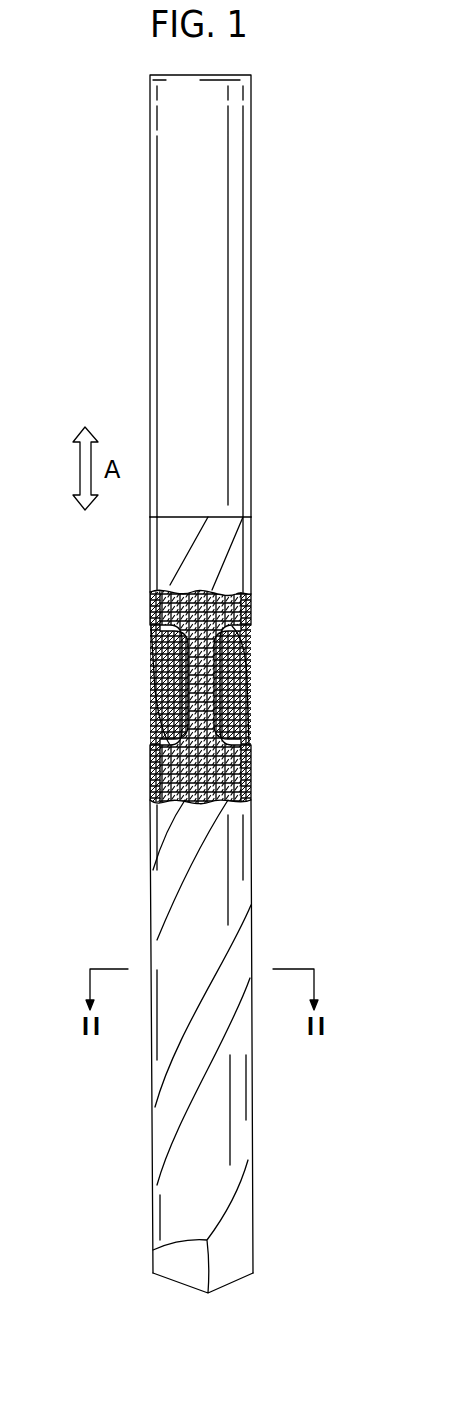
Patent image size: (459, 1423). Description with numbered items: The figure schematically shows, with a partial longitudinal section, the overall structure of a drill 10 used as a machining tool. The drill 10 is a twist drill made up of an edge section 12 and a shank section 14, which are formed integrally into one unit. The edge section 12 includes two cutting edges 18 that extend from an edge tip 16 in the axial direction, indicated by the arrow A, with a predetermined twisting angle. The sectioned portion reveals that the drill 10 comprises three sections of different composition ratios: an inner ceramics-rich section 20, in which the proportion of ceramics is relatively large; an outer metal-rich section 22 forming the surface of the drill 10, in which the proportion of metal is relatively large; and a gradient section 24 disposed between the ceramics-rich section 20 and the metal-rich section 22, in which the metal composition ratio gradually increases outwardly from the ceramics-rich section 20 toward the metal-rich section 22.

The drill 10 is at (373, 215).
The edge section 12 is at (224, 908).
The shank section 14 is at (252, 298).
The edge tip 16 is at (208, 1293).
The cutting edges 18 is at (152, 745).
The ceramics-rich section 20 is at (248, 768).
The metal-rich section 22 is at (250, 626).
The gradient section 24 is at (222, 652).